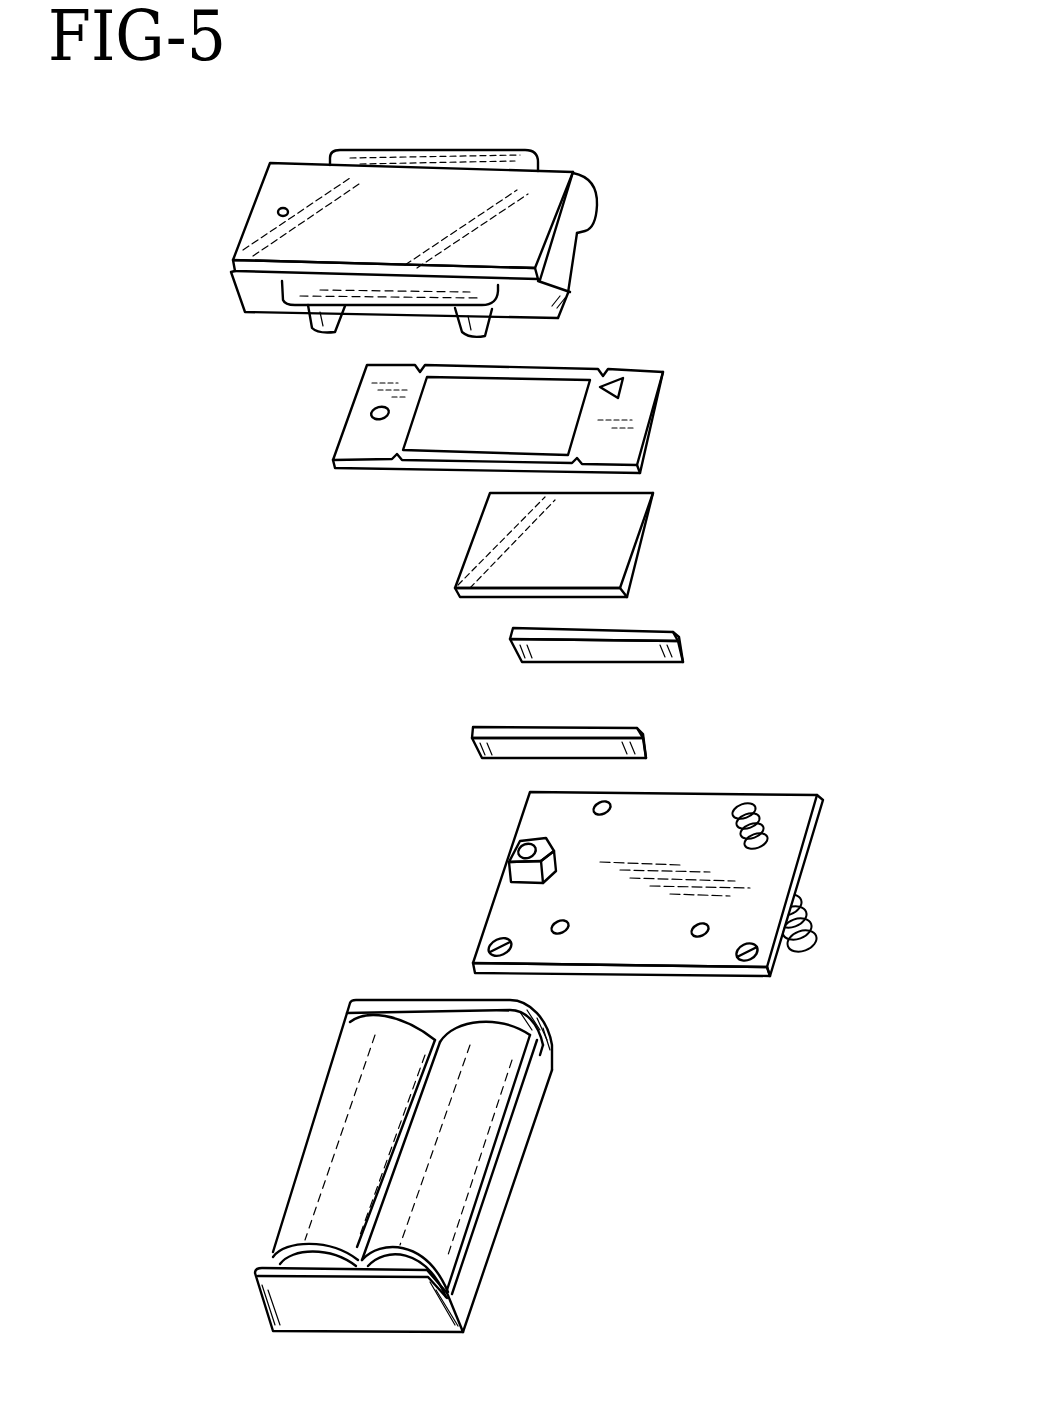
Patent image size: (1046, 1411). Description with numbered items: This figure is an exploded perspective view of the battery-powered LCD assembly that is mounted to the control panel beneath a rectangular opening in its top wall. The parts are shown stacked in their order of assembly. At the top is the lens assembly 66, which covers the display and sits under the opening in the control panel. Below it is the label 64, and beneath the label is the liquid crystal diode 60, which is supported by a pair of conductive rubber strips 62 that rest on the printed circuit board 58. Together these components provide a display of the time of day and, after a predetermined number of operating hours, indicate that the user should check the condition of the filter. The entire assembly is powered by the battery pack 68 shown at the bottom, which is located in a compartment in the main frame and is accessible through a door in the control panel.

The printed circuit board 58 is at (812, 830).
The liquid crystal diode 60 is at (645, 530).
The conductive rubber strips 62 is at (643, 742).
The label 64 is at (638, 402).
The lens assembly 66 is at (587, 203).
The battery pack 68 is at (513, 1153).